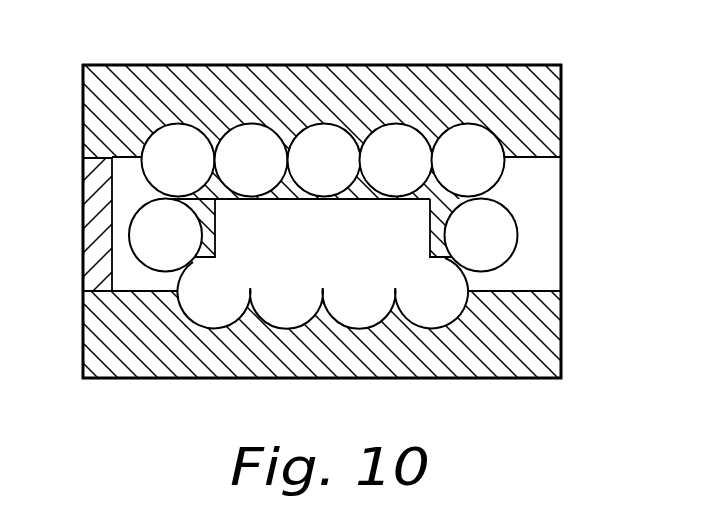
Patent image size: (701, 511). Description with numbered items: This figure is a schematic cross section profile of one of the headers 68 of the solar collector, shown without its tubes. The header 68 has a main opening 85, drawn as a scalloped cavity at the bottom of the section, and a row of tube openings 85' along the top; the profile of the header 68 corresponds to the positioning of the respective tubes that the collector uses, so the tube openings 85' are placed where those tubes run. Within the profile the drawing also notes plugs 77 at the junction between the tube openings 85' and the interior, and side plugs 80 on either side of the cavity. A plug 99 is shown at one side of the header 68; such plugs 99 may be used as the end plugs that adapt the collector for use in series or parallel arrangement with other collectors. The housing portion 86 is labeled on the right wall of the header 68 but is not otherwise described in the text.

The header 68 is at (562, 93).
The housing lower body 86 is at (562, 196).
The plugs 99 is at (92, 190).
The plugs 77 is at (282, 192).
The side plugs 80 is at (213, 227).
The main opening 85 is at (322, 280).
The tube openings 85' is at (323, 145).